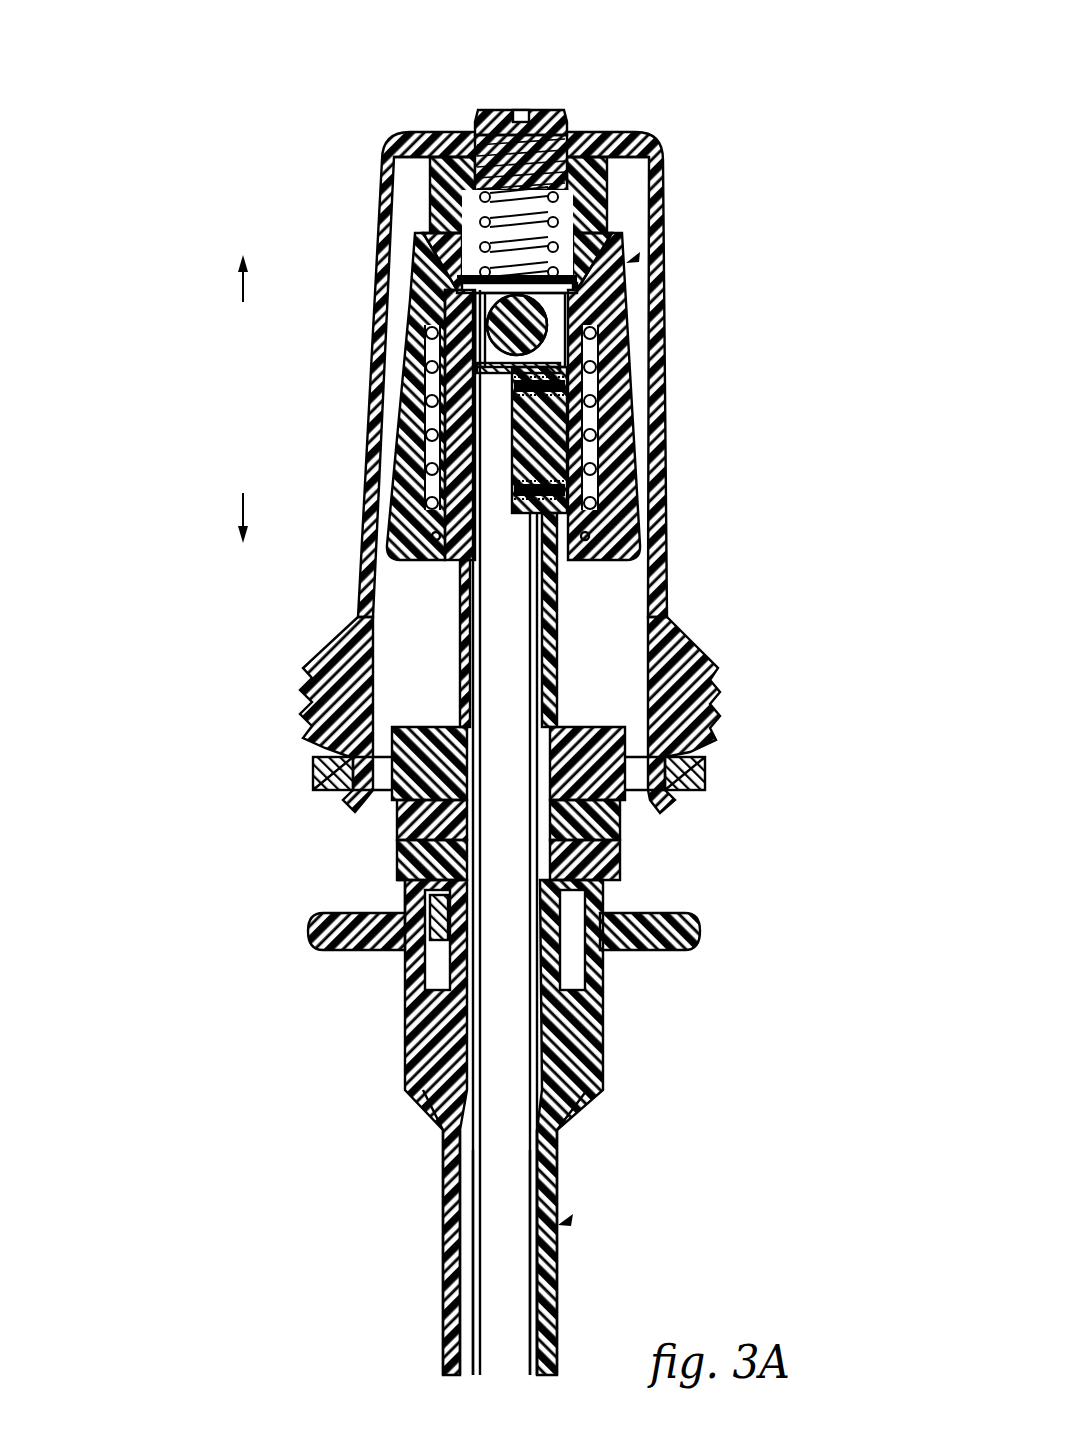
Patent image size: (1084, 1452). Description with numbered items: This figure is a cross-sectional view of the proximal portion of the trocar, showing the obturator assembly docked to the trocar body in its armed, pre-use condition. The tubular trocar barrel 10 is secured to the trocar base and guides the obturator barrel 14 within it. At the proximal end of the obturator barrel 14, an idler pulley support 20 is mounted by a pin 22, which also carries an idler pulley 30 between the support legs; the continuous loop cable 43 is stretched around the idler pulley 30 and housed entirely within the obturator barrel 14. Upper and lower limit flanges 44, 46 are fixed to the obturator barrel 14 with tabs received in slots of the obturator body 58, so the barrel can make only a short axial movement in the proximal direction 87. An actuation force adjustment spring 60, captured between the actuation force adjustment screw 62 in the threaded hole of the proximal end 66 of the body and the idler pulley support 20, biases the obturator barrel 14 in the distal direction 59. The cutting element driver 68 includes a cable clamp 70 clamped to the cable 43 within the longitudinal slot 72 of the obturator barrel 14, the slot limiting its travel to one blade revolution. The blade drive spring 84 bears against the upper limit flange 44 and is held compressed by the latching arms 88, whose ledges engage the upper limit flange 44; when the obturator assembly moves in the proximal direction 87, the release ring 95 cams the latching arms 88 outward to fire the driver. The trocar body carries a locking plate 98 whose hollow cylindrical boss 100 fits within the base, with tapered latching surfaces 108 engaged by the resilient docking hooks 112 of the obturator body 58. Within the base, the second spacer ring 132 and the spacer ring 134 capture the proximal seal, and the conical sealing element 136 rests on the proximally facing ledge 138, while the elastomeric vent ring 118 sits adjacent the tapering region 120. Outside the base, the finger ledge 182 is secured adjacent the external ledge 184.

The trocar barrel 10 is at (565, 1220).
The obturator barrel 14 is at (550, 1307).
The idler pulley support 20 is at (470, 283).
The pin 22 is at (500, 318).
The idler pulley 30 is at (478, 352).
The continuous loop cable 43 is at (480, 1252).
The upper limit flange 44 is at (575, 297).
The lower limit flange 46 is at (437, 728).
The obturator body 58 is at (655, 405).
The distal direction 59 is at (246, 494).
The actuation force adjustment spring 60 is at (660, 197).
The actuation force adjustment screw 62 is at (548, 112).
The proximal end of body 66 is at (613, 133).
The cutting element driver 68 is at (630, 259).
The cable clamp 70 is at (655, 421).
The longitudinal slot 72 is at (555, 645).
The blade drive spring 84 is at (600, 350).
The proximal direction 87 is at (246, 300).
The latching arms 88 is at (623, 470).
The release ring 95 is at (660, 146).
The locking plate 98 is at (705, 770).
The hollow cylindrical boss 100 is at (668, 722).
The tapered latching surfaces 108 is at (338, 758).
The resilient docking hooks 112 is at (695, 655).
The elastomeric vent ring 118 is at (607, 1033).
The tapering region 120 is at (568, 1115).
The second spacer ring 132 is at (607, 818).
The spacer ring 134 is at (610, 860).
The conical sealing element 136 is at (605, 955).
The proximally facing ledge 138 is at (398, 882).
The finger ledge 182 is at (320, 922).
The external ledge 184 is at (400, 942).